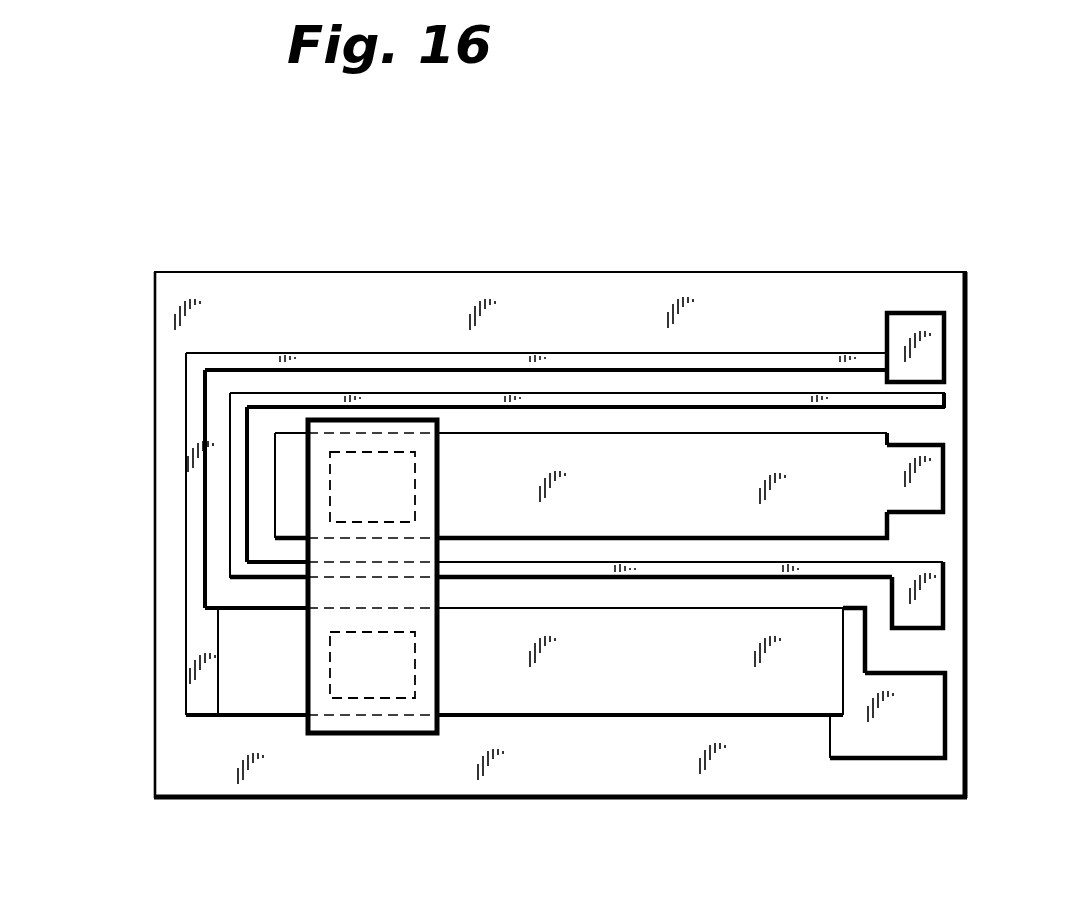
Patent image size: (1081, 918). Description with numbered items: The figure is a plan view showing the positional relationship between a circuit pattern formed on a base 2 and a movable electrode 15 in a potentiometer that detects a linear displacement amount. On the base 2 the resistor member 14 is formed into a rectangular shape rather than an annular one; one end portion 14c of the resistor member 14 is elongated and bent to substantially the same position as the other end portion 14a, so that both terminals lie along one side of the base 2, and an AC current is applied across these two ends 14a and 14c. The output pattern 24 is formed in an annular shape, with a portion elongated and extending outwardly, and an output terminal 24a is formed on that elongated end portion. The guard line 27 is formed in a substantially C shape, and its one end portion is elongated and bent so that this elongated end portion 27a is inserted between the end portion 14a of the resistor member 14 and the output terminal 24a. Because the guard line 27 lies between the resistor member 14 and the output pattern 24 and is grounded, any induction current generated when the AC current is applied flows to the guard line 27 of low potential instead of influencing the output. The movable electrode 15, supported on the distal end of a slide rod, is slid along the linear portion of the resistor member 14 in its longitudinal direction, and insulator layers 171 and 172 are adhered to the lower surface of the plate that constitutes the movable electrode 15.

The base 2 is at (346, 287).
The resistor member 14 is at (797, 687).
The end portion of the resistor member 14a is at (930, 712).
The end portion of the resistor member 14c is at (935, 350).
The movable electrode 15 is at (352, 722).
The output pattern 24 is at (716, 450).
The output terminal 24a is at (932, 477).
The guard line 27 is at (593, 570).
The elongated end portion of the guard line 27a is at (933, 593).
The insulator layer 171 is at (347, 487).
The insulator layer 172 is at (343, 662).